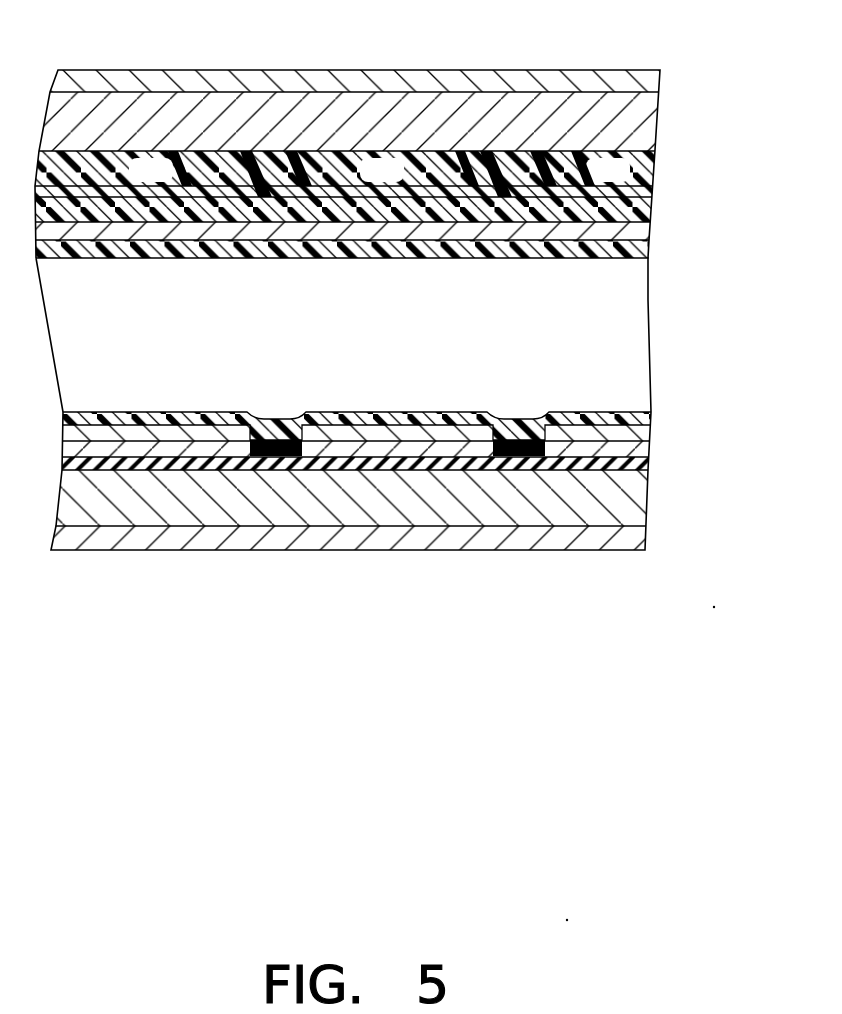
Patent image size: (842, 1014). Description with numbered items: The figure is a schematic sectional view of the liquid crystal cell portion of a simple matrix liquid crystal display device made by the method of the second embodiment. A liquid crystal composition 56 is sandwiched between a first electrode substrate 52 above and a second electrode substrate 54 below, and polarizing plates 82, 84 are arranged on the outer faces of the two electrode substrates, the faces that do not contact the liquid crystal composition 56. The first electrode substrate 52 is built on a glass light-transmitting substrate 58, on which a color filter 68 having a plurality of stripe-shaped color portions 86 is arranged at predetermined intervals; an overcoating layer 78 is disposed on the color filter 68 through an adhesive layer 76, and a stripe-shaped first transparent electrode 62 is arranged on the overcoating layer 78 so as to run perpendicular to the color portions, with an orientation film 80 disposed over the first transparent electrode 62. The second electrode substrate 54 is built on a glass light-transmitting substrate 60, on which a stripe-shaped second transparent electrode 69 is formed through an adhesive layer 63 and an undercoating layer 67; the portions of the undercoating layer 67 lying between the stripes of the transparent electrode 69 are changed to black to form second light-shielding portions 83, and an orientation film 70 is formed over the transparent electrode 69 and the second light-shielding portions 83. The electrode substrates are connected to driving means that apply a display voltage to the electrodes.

The first electrode substrate 52 is at (641, 63).
The second electrode substrate 54 is at (655, 534).
The liquid crystal composition 56 is at (650, 333).
The light-transmitting substrate 58 is at (250, 100).
The light-transmitting substrate 60 is at (328, 516).
The first transparent electrode 62 is at (650, 232).
The adhesive layer 63 is at (650, 460).
The undercoating layer 67 is at (650, 448).
The color filter 68 is at (657, 158).
The second transparent electrode 69 is at (198, 431).
The orientation film 70 is at (650, 415).
The adhesive layer 76 is at (650, 192).
The overcoating layer 78 is at (650, 212).
The orientation film 80 is at (650, 252).
The polarizing plate 82 is at (100, 70).
The second light-shielding portions 83 is at (523, 458).
The polarizing plate 84 is at (168, 537).
The stripe-shaped color portions 86 is at (179, 160).